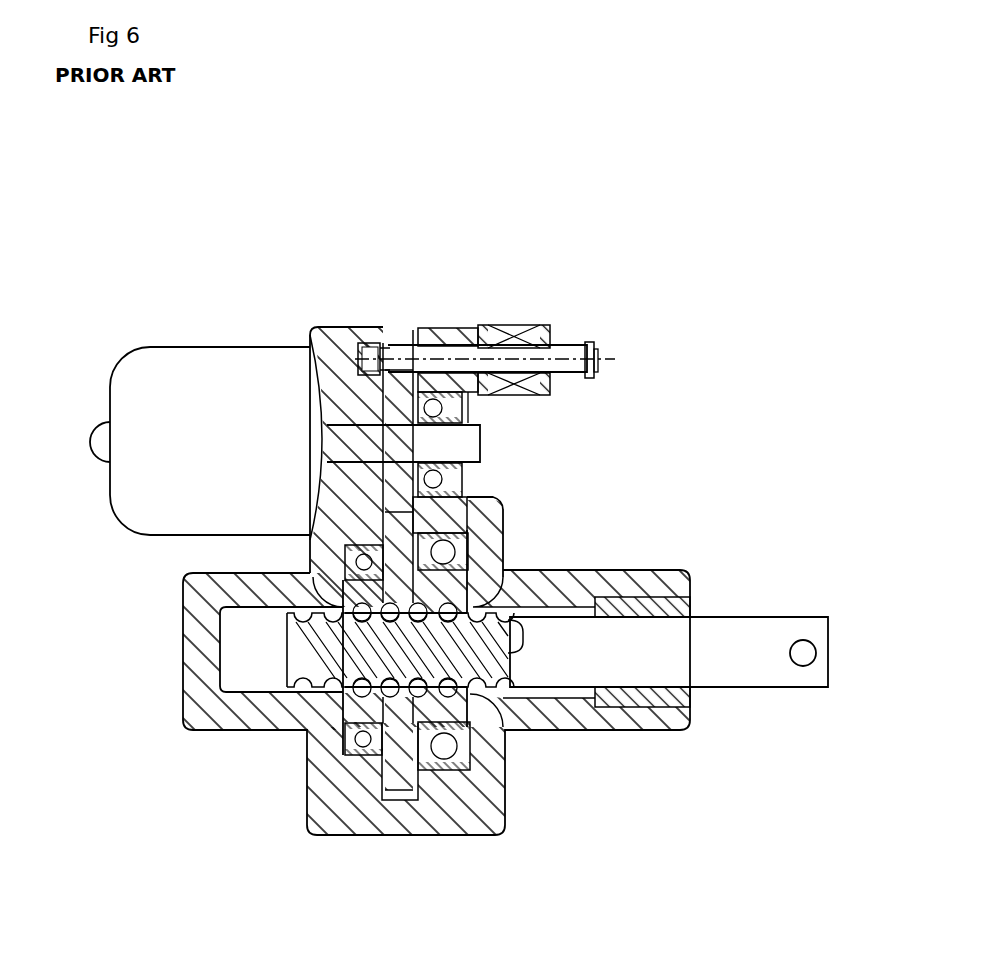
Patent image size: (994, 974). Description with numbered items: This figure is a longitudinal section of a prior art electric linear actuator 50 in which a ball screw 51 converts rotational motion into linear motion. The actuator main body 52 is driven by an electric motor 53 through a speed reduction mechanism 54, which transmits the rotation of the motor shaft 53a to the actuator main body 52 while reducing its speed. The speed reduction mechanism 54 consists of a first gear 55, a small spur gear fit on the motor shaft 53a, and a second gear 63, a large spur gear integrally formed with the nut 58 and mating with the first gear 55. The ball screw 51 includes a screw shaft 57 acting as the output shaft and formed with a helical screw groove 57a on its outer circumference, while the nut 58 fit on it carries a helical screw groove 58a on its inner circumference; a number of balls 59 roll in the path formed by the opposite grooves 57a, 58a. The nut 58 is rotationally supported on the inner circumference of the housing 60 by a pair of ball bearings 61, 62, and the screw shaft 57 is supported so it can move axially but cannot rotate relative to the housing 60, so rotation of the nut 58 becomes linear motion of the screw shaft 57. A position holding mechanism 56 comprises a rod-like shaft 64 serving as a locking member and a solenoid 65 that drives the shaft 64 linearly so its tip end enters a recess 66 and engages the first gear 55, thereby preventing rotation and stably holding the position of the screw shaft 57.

The actuator 50 is at (160, 253).
The ball screw 51 is at (490, 740).
The actuator main body 52 is at (747, 598).
The electric motor 53 is at (245, 358).
The motor shaft 53a is at (347, 438).
The speed reduction mechanism 54 is at (545, 430).
The first gear 55 is at (458, 424).
The position holding mechanism 56 is at (558, 318).
The screw shaft 57 is at (300, 657).
The helical screw groove 57a is at (492, 606).
The nut 58 is at (390, 767).
The helical screw groove 58a is at (457, 712).
The balls 59 is at (343, 708).
The housing 60 is at (615, 580).
The ball bearing 61 is at (353, 753).
The ball bearing 62 is at (447, 747).
The second gear 63 is at (467, 496).
The shaft 64 is at (555, 350).
The solenoid 65 is at (512, 318).
The recess 66 is at (367, 345).